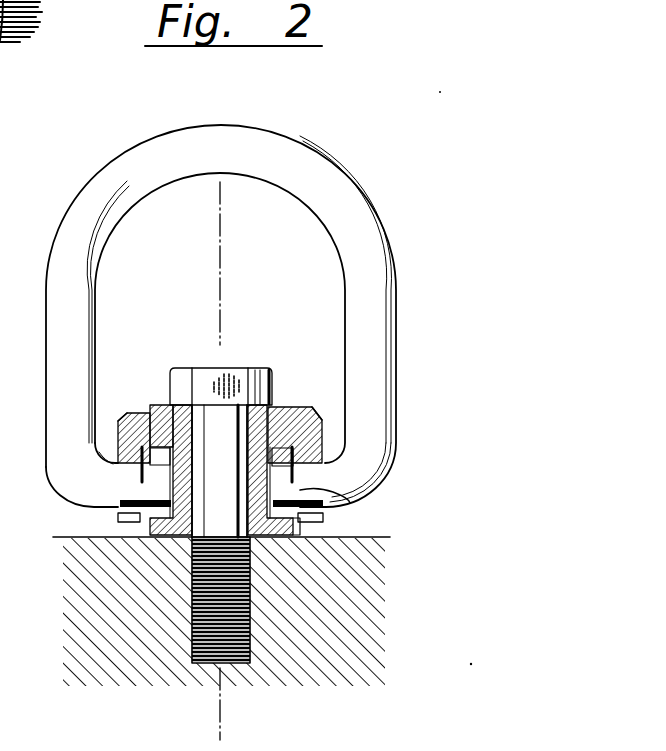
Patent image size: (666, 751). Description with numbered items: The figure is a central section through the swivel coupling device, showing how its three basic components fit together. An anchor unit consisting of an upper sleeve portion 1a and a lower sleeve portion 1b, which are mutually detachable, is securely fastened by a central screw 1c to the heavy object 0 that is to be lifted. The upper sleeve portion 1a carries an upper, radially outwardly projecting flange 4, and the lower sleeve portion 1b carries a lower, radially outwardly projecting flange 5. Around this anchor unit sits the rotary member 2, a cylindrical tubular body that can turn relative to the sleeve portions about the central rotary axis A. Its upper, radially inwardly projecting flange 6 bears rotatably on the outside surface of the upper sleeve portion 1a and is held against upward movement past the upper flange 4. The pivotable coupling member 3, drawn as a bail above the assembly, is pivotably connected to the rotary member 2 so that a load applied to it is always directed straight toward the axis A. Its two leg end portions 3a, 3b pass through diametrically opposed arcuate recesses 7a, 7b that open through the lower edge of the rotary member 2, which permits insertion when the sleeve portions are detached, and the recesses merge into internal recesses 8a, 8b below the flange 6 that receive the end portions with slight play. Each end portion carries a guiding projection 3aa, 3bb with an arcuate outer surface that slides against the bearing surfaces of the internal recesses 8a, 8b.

The heavy object 0 is at (107, 585).
The upper sleeve portion 1a is at (275, 404).
The lower sleeve portion 1b is at (318, 549).
The central screw 1c is at (215, 386).
The rotary member 2 is at (118, 466).
The pivotable coupling member 3 is at (62, 228).
The leg end portion 3a is at (127, 488).
The leg end portion 3b is at (350, 503).
The guiding projection 3aa is at (137, 413).
The guiding projection 3bb is at (255, 368).
The upper flange 4 is at (157, 404).
The lower flange 5 is at (120, 531).
The upper flange of rotary body 6 is at (290, 406).
The arcuate opening or recess 7a is at (150, 480).
The arcuate opening or recess 7b is at (380, 479).
The internal recess 8a is at (118, 420).
The internal recess 8b is at (320, 406).
The central rotary axis A is at (220, 248).